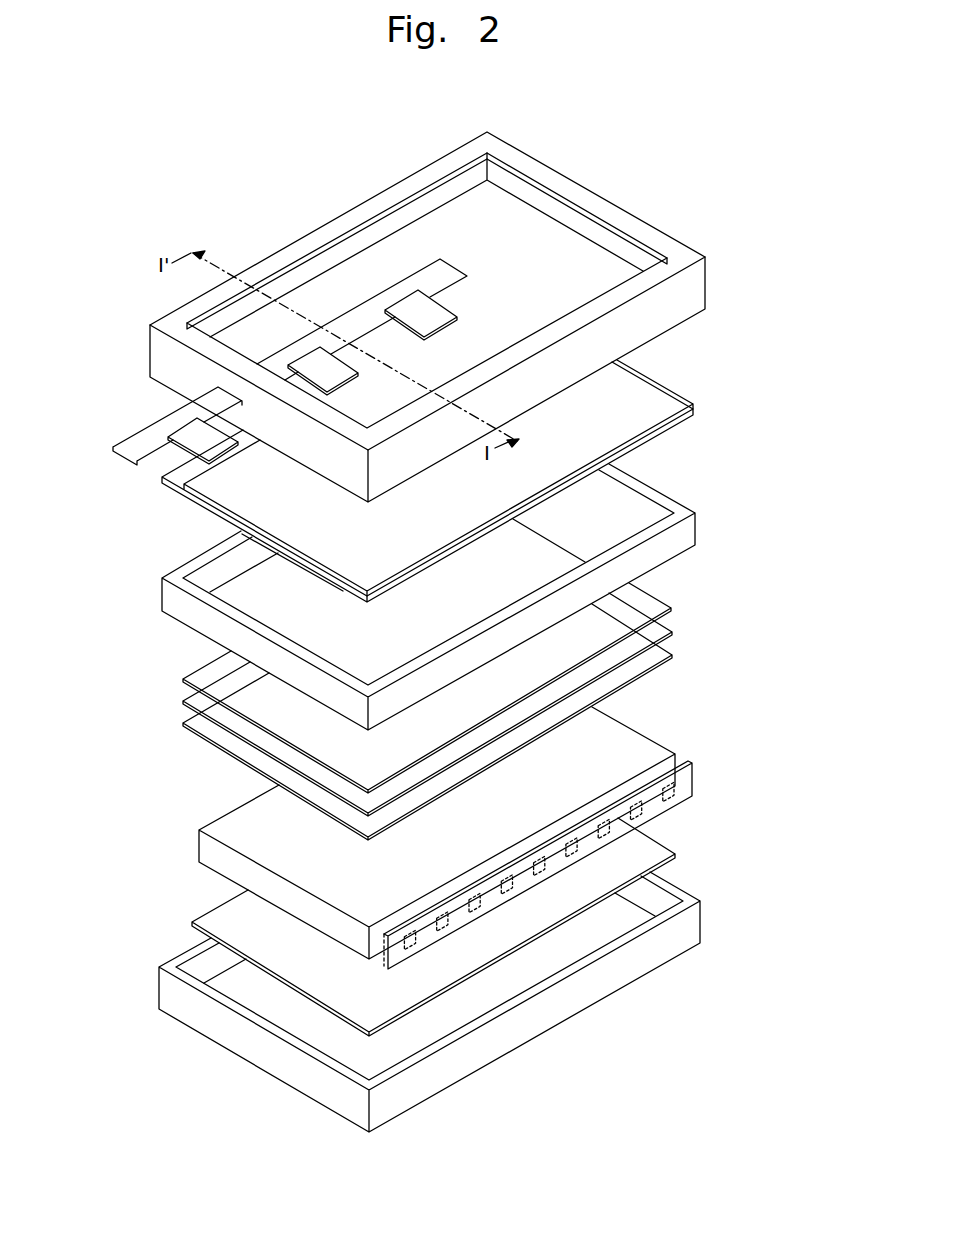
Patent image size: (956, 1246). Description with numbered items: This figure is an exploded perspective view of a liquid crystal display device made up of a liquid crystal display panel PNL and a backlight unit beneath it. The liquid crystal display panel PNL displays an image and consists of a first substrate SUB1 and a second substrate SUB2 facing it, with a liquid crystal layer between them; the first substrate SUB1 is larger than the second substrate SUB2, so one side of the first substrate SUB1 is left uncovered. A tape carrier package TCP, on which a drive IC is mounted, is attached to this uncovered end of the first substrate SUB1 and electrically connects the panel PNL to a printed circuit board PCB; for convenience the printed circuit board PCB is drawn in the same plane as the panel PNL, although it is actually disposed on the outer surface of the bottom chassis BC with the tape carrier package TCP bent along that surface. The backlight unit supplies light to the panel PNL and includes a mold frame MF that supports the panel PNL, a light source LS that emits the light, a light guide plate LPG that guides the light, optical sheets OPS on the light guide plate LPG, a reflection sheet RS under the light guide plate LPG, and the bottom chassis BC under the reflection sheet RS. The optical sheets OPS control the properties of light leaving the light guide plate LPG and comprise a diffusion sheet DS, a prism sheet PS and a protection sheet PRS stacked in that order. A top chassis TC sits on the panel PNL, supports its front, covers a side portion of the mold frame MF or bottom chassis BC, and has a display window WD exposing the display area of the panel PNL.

The top chassis TC is at (698, 290).
The display window WD is at (534, 237).
The liquid crystal display panel PNL is at (497, 481).
The first substrate SUB1 is at (695, 413).
The second substrate SUB2 is at (695, 404).
The printed circuit board PCB is at (116, 454).
The tape carrier package TCP is at (197, 445).
The mold frame MF is at (687, 503).
The optical sheets OPS is at (489, 711).
The protection sheet PRS is at (664, 608).
The prism sheet PS is at (666, 633).
The diffusion sheet DS is at (666, 654).
The light guide plate LPG is at (659, 743).
The light source LS is at (694, 777).
The reflection sheet RS is at (677, 854).
The bottom chassis BC is at (698, 925).